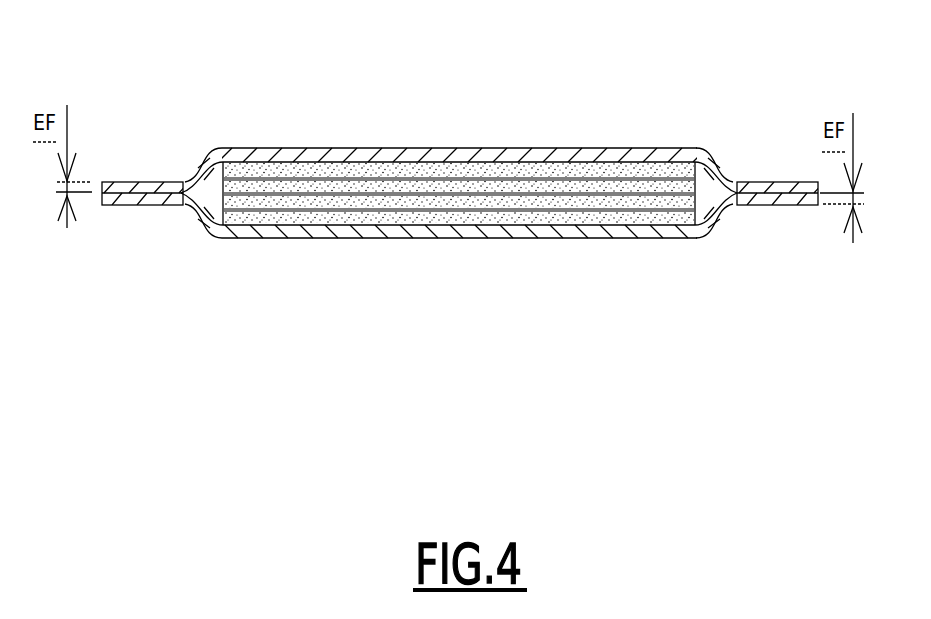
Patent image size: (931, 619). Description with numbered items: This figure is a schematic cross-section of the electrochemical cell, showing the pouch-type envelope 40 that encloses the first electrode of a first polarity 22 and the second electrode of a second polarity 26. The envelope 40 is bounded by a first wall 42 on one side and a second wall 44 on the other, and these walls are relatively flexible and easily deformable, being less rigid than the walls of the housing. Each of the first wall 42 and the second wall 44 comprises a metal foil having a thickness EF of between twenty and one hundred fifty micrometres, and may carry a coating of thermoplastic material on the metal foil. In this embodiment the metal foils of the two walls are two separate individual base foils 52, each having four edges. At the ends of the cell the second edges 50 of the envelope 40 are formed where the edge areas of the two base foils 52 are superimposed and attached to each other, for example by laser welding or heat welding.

The first electrode of a first polarity 22 is at (216, 172).
The second electrode of a second polarity 26 is at (705, 208).
The envelope 40 is at (484, 137).
The first wall 42 is at (413, 148).
The second wall 44 is at (441, 238).
The second edges 50 is at (94, 203).
The base foils 52 is at (561, 154).